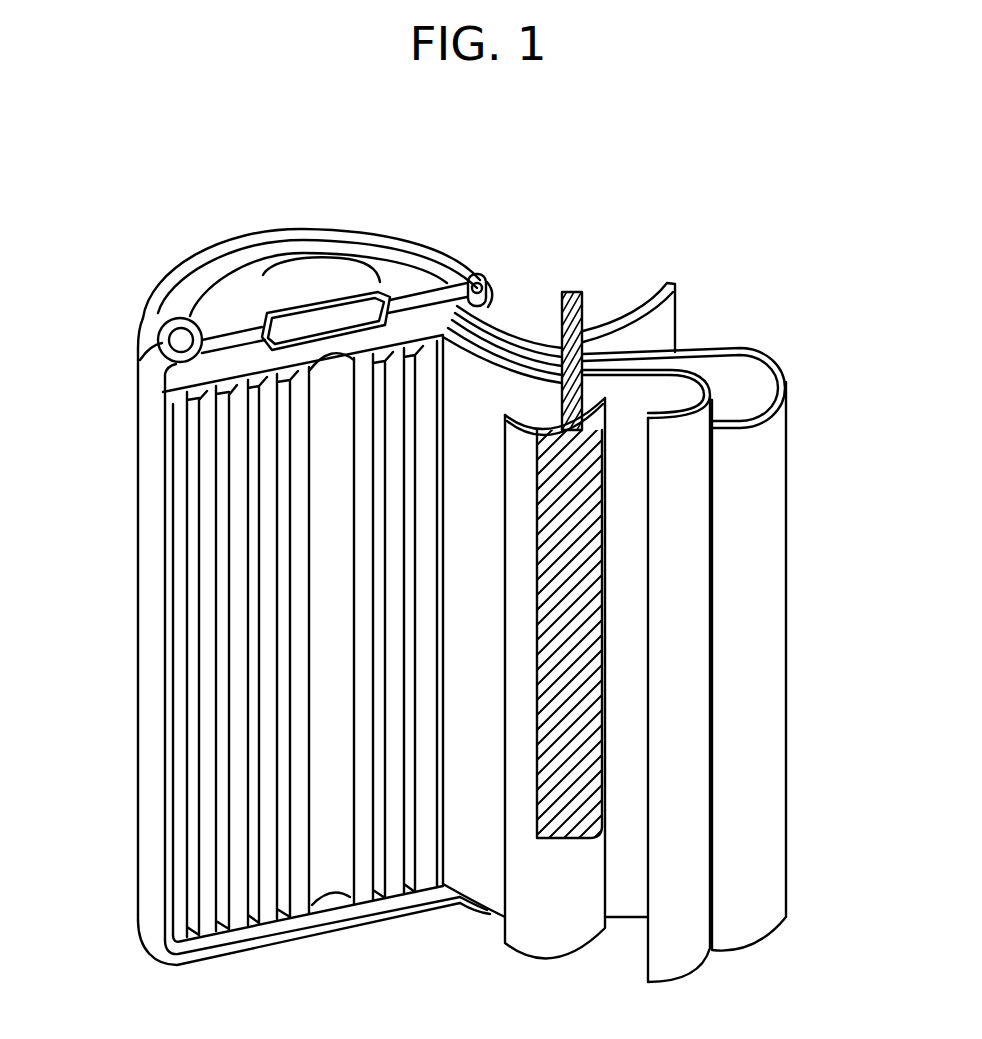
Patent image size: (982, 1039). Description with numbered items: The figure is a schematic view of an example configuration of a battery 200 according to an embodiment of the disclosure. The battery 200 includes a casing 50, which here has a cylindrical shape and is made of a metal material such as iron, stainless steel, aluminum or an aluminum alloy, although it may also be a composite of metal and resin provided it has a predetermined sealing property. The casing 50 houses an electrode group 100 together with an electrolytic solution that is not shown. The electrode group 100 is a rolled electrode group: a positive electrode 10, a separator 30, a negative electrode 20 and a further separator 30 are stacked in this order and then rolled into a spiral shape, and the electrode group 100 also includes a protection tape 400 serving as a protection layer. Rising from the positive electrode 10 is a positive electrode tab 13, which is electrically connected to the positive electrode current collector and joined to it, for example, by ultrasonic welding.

The battery 200 is at (82, 215).
The casing 50 is at (150, 603).
The electrode group 100 is at (890, 246).
The separator 30 is at (670, 310).
The negative electrode 20 is at (745, 347).
The positive electrode 10 is at (578, 884).
The protection tape 400 is at (567, 487).
The positive electrode tab 13 is at (570, 291).